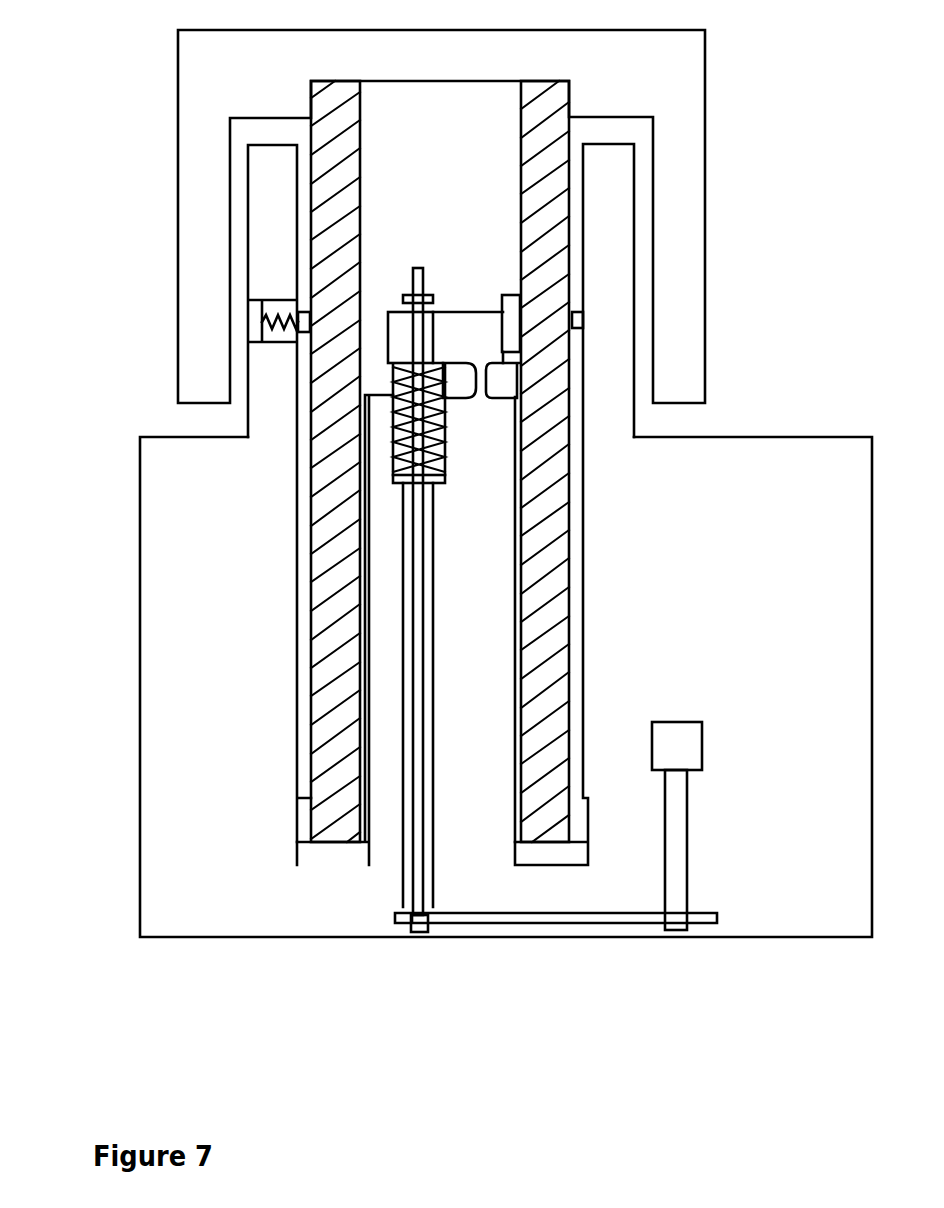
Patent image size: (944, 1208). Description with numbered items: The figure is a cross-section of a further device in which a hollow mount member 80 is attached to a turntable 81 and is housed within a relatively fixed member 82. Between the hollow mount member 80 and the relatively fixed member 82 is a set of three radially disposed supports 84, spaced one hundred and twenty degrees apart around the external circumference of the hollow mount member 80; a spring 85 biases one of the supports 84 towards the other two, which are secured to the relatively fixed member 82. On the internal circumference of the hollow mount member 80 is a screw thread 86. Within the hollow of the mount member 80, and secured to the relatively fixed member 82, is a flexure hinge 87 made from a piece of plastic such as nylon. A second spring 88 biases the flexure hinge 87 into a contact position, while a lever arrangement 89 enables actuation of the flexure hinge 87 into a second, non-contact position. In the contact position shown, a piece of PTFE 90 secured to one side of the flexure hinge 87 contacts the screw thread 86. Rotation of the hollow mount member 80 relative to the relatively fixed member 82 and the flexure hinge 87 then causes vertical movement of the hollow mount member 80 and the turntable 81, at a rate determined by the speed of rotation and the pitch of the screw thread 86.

The hollow mount member 80 is at (569, 93).
The turntable 81 is at (705, 51).
The relatively fixed member 82 is at (137, 779).
The radially disposed supports 84 is at (583, 322).
The spring 85 is at (263, 321).
The screw thread 86 is at (360, 172).
The flexure hinge 87 is at (482, 400).
The second spring 88 is at (445, 462).
The lever arrangement 89 is at (667, 720).
The piece of PTFE 90 is at (515, 293).